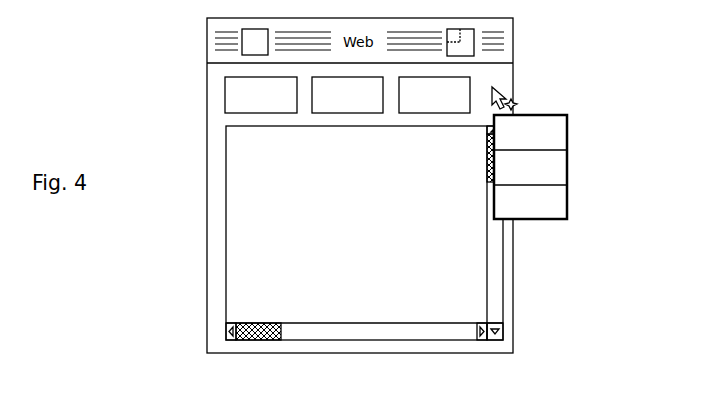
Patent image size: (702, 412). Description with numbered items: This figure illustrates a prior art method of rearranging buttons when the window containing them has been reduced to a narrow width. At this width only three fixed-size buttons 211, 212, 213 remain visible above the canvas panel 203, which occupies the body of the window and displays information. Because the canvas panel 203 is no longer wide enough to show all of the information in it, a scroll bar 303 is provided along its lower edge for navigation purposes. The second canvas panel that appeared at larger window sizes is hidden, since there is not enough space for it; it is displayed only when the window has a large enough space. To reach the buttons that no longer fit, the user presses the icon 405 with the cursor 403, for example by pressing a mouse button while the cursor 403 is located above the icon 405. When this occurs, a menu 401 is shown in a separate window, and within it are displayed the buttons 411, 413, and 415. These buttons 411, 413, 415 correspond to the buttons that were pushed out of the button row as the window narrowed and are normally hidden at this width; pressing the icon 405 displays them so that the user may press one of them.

The canvas panel 203 is at (243, 213).
The button 211 is at (258, 113).
The button 212 is at (345, 113).
The button 213 is at (433, 113).
The scroll bar 303 is at (398, 330).
The menu 401 is at (555, 180).
The cursor 403 is at (516, 104).
The icon 405 is at (494, 90).
The button 411 is at (558, 138).
The button 413 is at (557, 173).
The button 415 is at (557, 207).